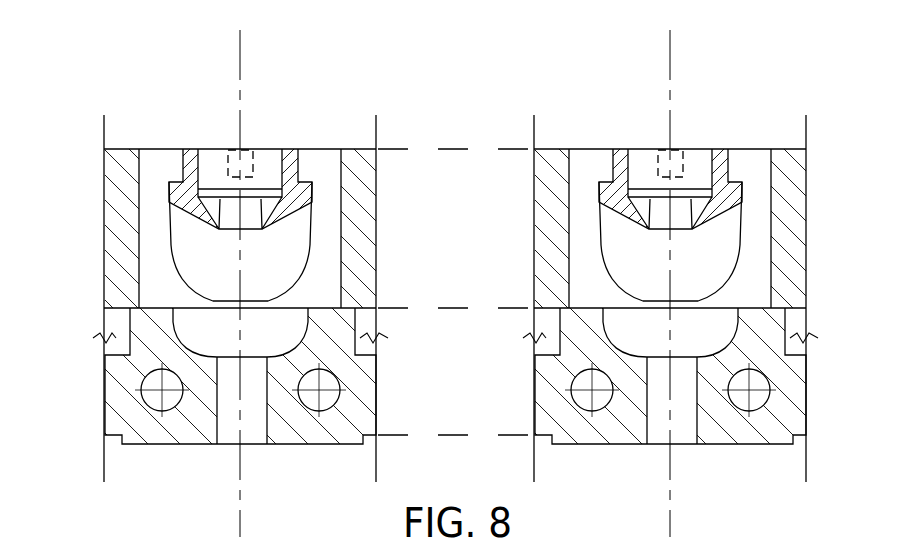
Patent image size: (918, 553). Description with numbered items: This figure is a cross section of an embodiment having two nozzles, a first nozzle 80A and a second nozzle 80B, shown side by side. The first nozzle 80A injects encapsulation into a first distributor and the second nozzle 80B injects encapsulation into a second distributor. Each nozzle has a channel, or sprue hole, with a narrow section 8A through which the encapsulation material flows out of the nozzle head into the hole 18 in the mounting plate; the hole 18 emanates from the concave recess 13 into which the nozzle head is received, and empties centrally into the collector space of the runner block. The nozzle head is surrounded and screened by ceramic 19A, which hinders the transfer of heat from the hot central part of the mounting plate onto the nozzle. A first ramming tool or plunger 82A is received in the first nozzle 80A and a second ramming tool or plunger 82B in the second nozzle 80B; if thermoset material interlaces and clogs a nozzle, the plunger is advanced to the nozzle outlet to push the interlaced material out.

The narrow section of sprue hole 8A is at (664, 216).
The concave recess 13 is at (268, 340).
The hole in mounting plate 18 is at (231, 417).
The ceramic 19A is at (117, 212).
The first nozzle 80A is at (260, 264).
The second nozzle 80B is at (650, 264).
The first ramming tool or plunger 82A is at (238, 160).
The second ramming tool or plunger 82B is at (676, 160).